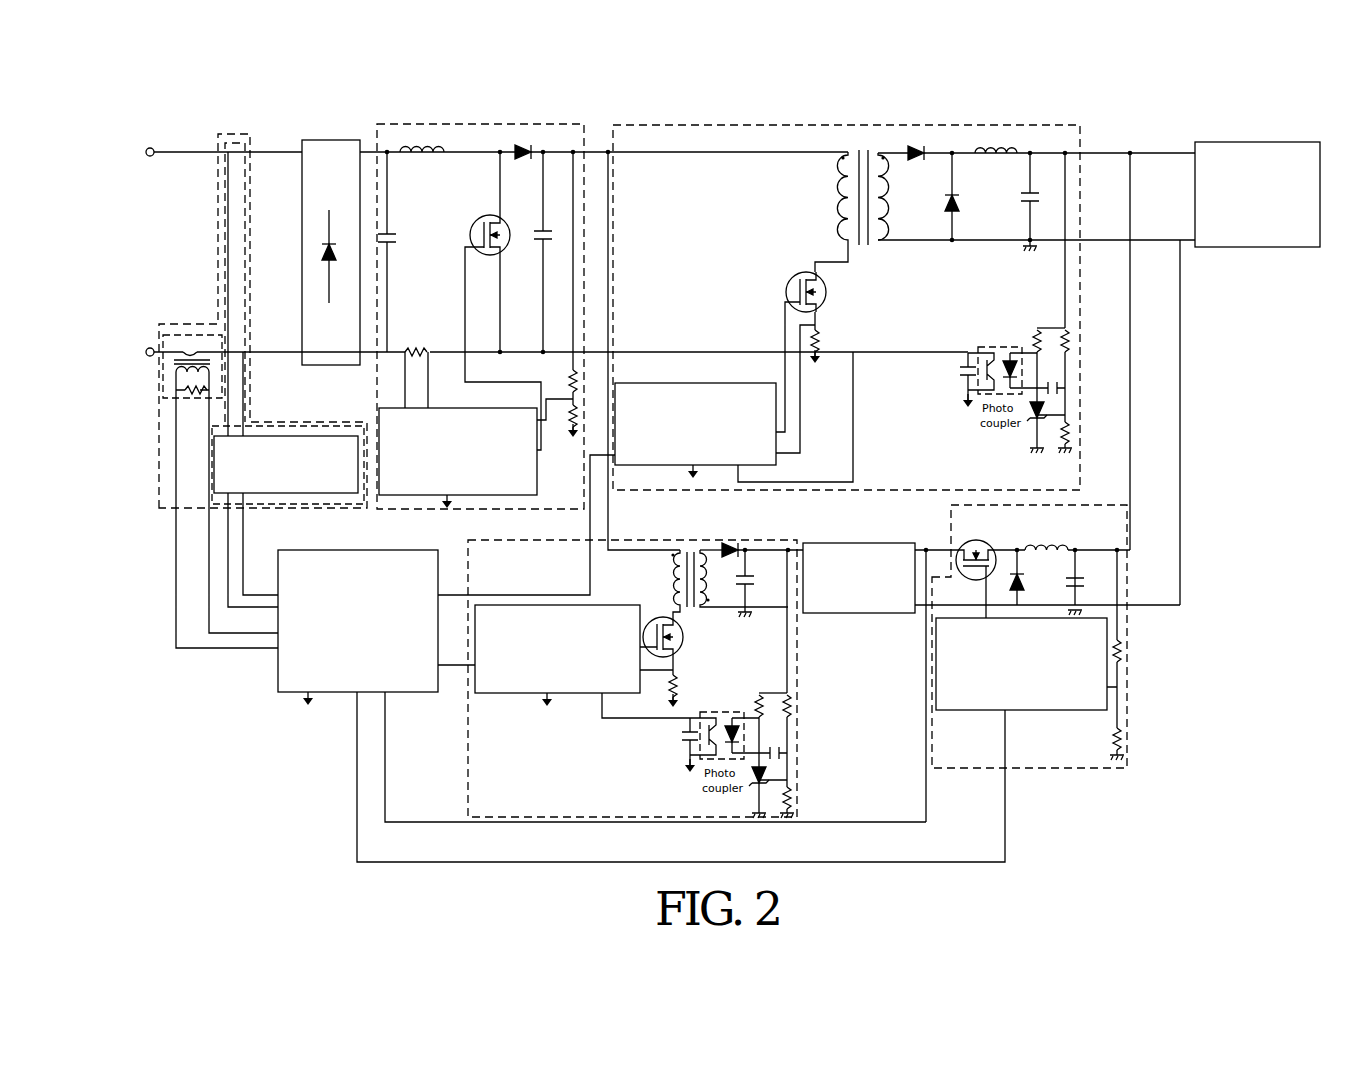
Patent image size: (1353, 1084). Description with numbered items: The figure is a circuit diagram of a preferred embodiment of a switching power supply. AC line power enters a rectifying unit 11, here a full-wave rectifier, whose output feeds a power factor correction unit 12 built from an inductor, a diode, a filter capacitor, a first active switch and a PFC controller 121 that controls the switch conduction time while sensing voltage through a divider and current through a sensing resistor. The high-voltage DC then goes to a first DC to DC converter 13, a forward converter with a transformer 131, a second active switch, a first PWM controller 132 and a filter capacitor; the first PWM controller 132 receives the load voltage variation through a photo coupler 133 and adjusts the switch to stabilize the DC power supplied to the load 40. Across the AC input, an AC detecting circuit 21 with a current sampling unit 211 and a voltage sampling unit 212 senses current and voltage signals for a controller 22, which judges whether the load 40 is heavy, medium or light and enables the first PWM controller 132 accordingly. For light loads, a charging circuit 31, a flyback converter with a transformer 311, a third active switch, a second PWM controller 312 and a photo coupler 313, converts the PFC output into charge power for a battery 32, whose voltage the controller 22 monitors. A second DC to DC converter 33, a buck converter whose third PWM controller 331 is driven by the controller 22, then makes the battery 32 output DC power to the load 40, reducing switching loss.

The rectifying unit 11 is at (318, 140).
The power factor correction unit 12 is at (465, 315).
The PFC controller 121 is at (500, 495).
The first DC to DC converter 13 is at (846, 286).
The transformer 131 is at (882, 143).
The first PWM controller 132 is at (650, 383).
The photo coupler 133 is at (1000, 347).
The AC detecting circuit 21 is at (236, 340).
The current sampling unit 211 is at (163, 388).
The voltage sampling unit 212 is at (258, 510).
The controller 22 is at (305, 692).
The charging circuit 31 is at (630, 697).
The transformer 311 is at (694, 549).
The second PWM controller 312 is at (596, 693).
The photo coupler 313 is at (716, 712).
The battery 32 is at (862, 613).
The second DC to DC converter 33 is at (1049, 652).
The third PWM controller 331 is at (1037, 710).
The load 40 is at (1250, 240).